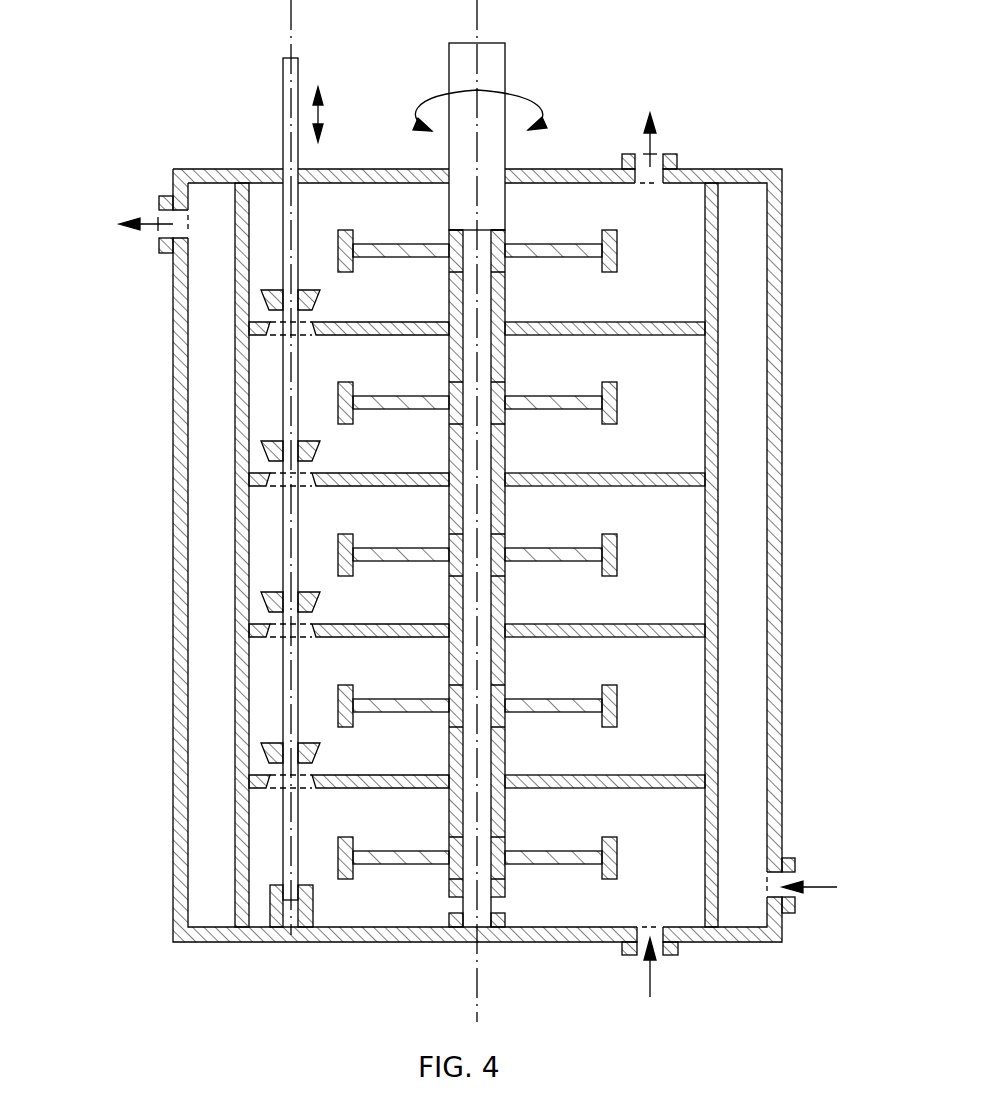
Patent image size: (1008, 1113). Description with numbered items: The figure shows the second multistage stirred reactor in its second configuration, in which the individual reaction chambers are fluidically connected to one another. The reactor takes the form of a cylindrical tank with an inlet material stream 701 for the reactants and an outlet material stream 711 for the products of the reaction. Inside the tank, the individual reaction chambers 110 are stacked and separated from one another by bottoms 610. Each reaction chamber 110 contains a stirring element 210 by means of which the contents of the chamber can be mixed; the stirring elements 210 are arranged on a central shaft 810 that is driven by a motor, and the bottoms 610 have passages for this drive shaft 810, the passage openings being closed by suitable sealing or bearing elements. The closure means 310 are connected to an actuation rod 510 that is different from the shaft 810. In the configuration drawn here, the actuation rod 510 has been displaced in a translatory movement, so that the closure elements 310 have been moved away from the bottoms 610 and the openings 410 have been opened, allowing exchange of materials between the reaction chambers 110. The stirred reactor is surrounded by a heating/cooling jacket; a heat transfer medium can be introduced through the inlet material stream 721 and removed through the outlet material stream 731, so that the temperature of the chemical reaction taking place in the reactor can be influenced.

The reaction chamber 110 is at (270, 218).
The stirring element 210 is at (615, 248).
The closure means 310 is at (263, 291).
The opening 410 is at (277, 330).
The actuation rod 510 is at (283, 100).
The bottom 610 is at (580, 320).
The inlet material stream 701 is at (650, 980).
The outlet material stream 711 is at (668, 150).
The inlet material stream 721 is at (823, 887).
The outlet material stream 731 is at (153, 224).
The central shaft 810 is at (505, 77).